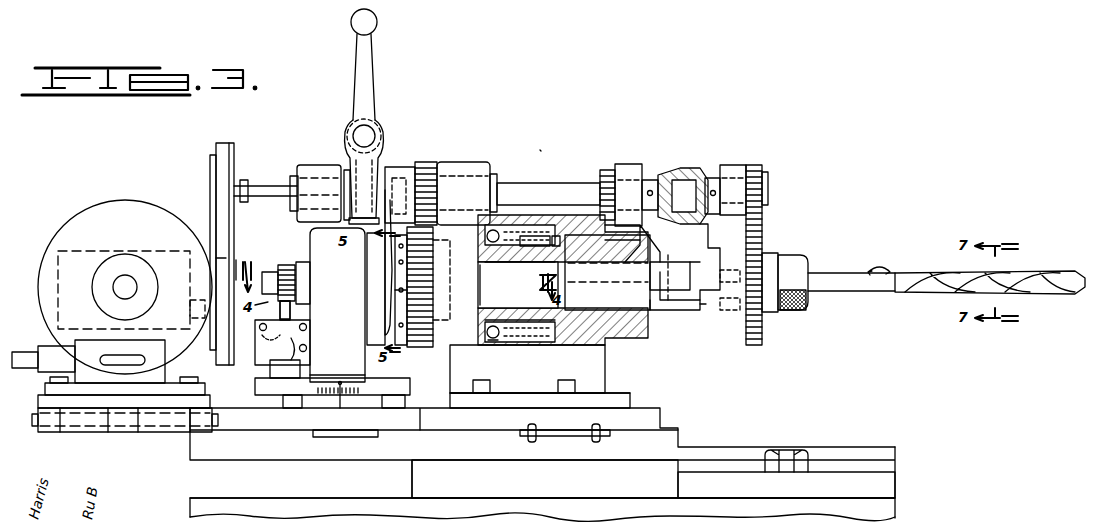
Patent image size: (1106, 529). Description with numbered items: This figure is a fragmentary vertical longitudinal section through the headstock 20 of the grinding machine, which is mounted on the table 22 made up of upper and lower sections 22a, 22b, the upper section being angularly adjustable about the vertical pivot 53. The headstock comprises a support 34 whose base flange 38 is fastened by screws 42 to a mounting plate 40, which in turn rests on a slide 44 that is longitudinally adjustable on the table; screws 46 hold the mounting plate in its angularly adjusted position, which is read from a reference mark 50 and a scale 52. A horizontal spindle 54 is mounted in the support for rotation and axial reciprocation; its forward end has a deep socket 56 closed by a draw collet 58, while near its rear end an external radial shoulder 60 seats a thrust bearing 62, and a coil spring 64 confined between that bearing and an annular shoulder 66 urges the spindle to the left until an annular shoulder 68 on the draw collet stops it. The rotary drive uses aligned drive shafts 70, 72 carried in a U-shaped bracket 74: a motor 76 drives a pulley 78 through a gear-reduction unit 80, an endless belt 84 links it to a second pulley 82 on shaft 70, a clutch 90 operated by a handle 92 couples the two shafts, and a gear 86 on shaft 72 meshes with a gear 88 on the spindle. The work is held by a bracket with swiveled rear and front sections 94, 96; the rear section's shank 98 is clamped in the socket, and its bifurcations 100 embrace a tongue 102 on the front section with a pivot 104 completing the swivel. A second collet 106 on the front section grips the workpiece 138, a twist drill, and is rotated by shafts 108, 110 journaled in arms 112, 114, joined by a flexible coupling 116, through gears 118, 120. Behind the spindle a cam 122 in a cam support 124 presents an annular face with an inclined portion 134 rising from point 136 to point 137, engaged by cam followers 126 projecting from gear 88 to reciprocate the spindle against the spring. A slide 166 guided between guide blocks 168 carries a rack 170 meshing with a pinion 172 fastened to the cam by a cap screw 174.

The headstock 20 is at (558, 142).
The table 22 is at (886, 456).
The upper table section 22a is at (718, 452).
The lower table section 22b is at (880, 508).
The support 34 is at (607, 375).
The base flange 38 is at (625, 396).
The mounting plate 40 is at (632, 418).
The screws 42 is at (566, 380).
The slide 44 is at (676, 437).
The screws 46 is at (492, 385).
The reference mark 50 is at (528, 420).
The scale 52 is at (560, 430).
The vertical pivot 53 is at (793, 450).
The spindle 54 is at (563, 280).
The socket 56 is at (488, 300).
The draw collet 58 is at (640, 240).
The external radial shoulder 60 is at (520, 320).
The thrust bearing 62 is at (493, 342).
The coil spring 64 is at (532, 238).
The annular shoulder 66 is at (555, 238).
The annular shoulder 68 is at (600, 243).
The drive shaft 70 is at (275, 192).
The drive shaft 72 is at (494, 175).
The U-shaped bracket 74 is at (459, 166).
The motor 76 is at (97, 215).
The pulley 78 is at (240, 262).
The gear-reduction unit 80 is at (118, 258).
The second pulley 82 is at (236, 155).
The endless belt 84 is at (226, 256).
The gear 86 is at (427, 165).
The gear 88 is at (420, 248).
The clutch 90 is at (384, 170).
The handle 92 is at (366, 66).
The rear bracket section 94 is at (660, 310).
The front bracket section 96 is at (706, 310).
The shank 98 is at (607, 272).
The bifurcations 100 is at (705, 268).
The tongue 102 is at (662, 272).
The pivot 104 is at (693, 262).
The second collet 106 is at (795, 262).
The shaft 108 is at (505, 184).
The shaft 110 is at (700, 180).
The arm 112 is at (612, 168).
The arm 114 is at (733, 166).
The flexible coupling 116 is at (684, 170).
The gear 118 is at (766, 172).
The gear 120 is at (762, 243).
The cam 122 is at (368, 262).
The cam support 124 is at (337, 363).
The cam followers 126 is at (398, 270).
The inclined portion 134 is at (478, 282).
The point 136 is at (402, 290).
The point 137 is at (520, 253).
The workpiece 138 is at (906, 275).
The slide 166 is at (272, 358).
The guide blocks 168 is at (300, 340).
The rack 170 is at (312, 318).
The pinion 172 is at (290, 265).
The cap screw 174 is at (280, 272).